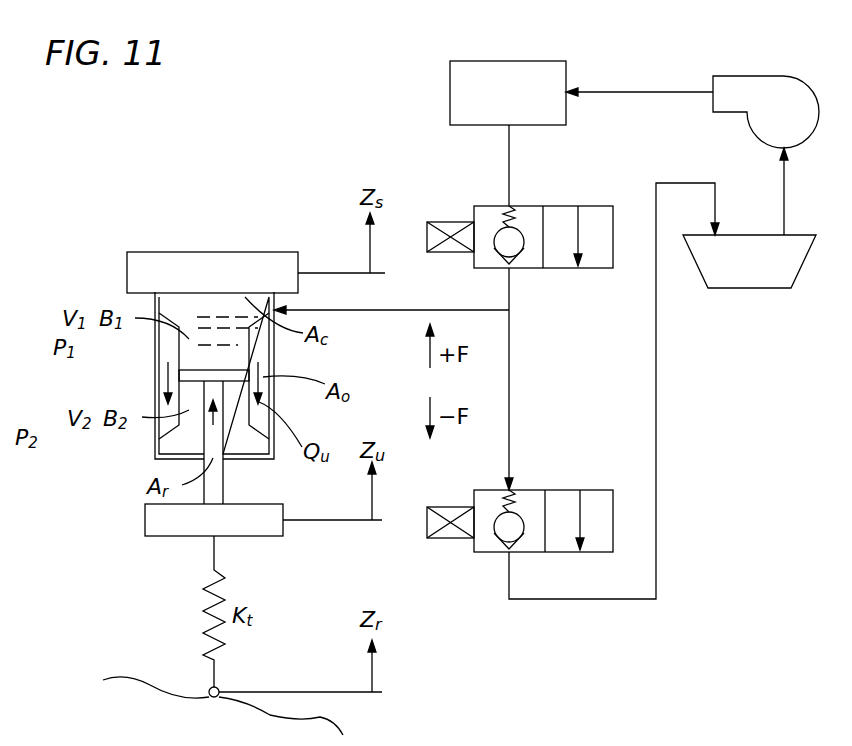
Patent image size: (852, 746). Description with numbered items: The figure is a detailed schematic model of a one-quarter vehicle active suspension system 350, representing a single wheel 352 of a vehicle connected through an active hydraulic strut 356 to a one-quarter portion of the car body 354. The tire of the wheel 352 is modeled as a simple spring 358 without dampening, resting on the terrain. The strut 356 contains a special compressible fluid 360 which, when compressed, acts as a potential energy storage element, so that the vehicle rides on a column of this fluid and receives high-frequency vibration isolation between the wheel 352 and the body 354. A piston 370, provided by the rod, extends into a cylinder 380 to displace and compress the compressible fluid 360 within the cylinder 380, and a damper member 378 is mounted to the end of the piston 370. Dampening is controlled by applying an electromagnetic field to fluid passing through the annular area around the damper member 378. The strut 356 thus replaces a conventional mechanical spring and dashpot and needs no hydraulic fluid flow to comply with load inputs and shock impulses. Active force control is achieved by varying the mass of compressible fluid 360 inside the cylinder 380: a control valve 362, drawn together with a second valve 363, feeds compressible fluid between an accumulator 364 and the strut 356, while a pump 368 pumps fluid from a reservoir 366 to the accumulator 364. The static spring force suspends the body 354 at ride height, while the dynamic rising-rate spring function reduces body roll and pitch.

The one-quarter vehicle active suspension system 350 is at (122, 442).
The wheel 352 is at (145, 518).
The car body 354 is at (127, 273).
The active hydraulic strut 356 is at (273, 388).
The spring 358 is at (207, 608).
The compressible fluid 360 is at (237, 342).
The control valve 362 is at (560, 268).
The second solenoid valve 363 is at (560, 490).
The accumulator 364 is at (508, 93).
The reservoir 366 is at (749, 261).
The pump 368 is at (766, 112).
The piston 370 is at (223, 485).
The damper member 378 is at (190, 374).
The cylinder 380 is at (149, 452).